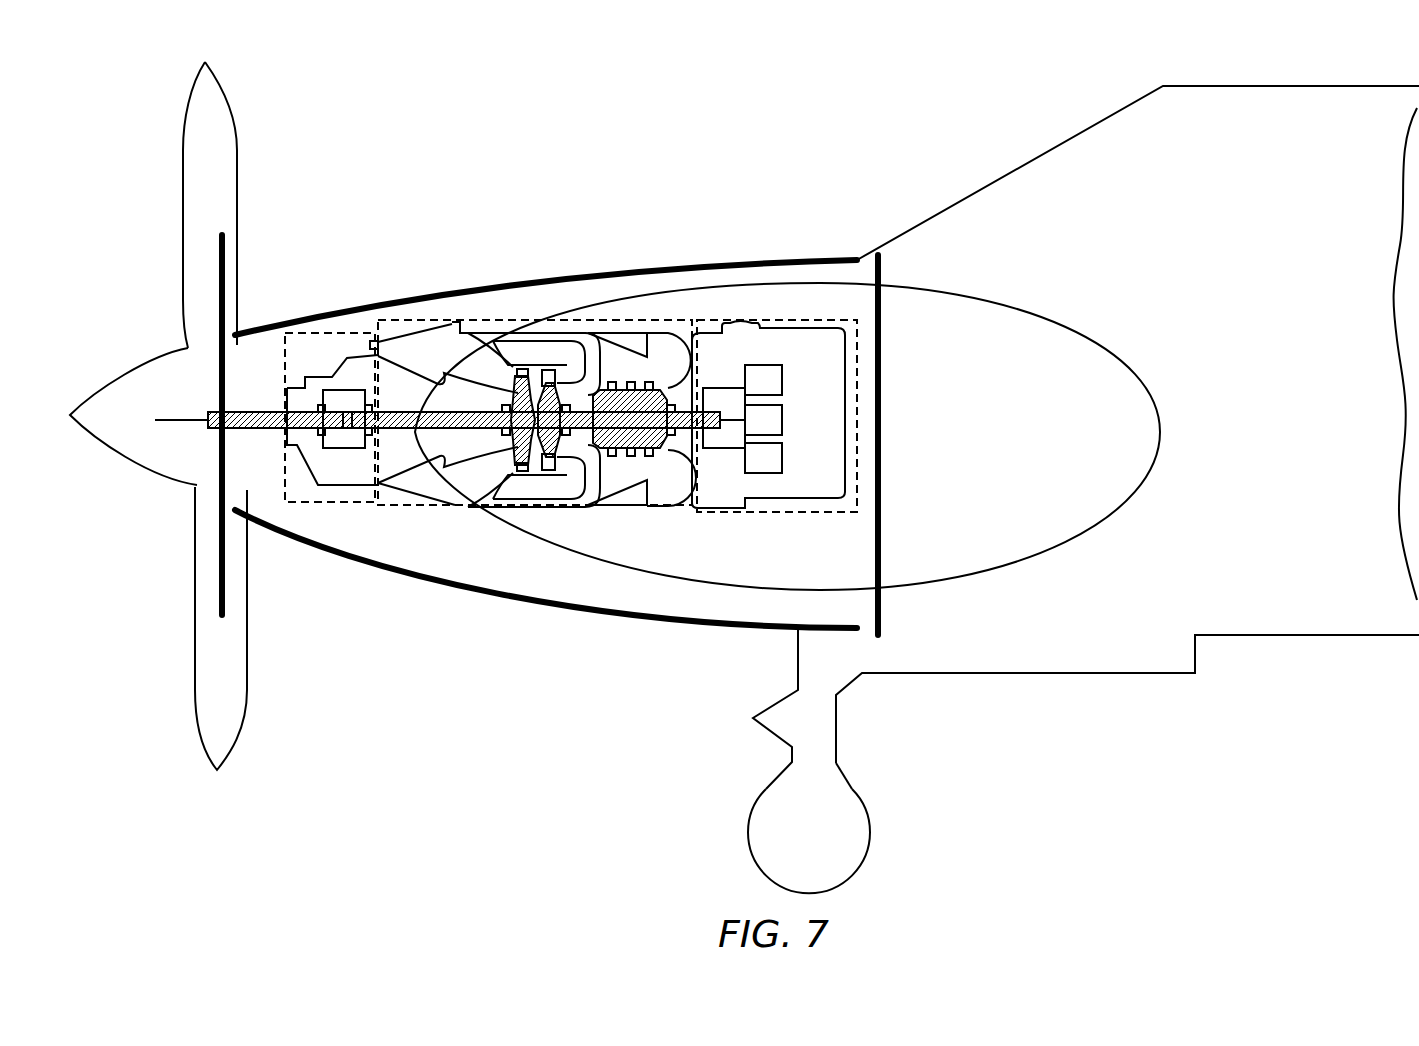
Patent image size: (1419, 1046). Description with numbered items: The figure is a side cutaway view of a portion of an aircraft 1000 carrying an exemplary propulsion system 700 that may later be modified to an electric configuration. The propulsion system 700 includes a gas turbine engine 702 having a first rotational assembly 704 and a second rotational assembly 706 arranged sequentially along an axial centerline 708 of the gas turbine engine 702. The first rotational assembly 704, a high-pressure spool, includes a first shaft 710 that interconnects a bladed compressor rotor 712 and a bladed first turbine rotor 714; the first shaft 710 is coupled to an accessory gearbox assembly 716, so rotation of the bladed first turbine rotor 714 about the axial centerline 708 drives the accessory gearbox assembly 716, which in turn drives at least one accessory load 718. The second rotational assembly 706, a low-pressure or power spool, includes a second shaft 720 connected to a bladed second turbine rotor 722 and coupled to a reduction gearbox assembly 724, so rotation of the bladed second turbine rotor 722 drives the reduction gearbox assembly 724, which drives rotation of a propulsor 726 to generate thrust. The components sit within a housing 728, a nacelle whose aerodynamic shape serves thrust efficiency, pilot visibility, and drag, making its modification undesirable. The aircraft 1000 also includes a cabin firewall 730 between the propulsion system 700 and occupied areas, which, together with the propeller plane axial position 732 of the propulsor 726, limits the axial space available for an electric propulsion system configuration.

The propulsion system 700 is at (637, 328).
The gas turbine engine 702 is at (547, 320).
The first rotational assembly 704 is at (619, 454).
The second rotational assembly 706 is at (470, 434).
The axial centerline 708 is at (186, 425).
The first shaft 710 is at (587, 392).
The bladed compressor rotor 712 is at (618, 385).
The bladed first turbine rotor 714 is at (548, 458).
The accessory gearbox assembly 716 is at (732, 462).
The accessory load 718 is at (783, 455).
The second shaft 720 is at (447, 428).
The bladed second turbine rotor 722 is at (513, 367).
The reduction gearbox assembly 724 is at (348, 368).
The propulsor 726 is at (257, 189).
The housing 728 is at (818, 258).
The cabin firewall 730 is at (880, 532).
The propeller plane axial position 732 is at (226, 588).
The aircraft 1000 is at (1200, 164).